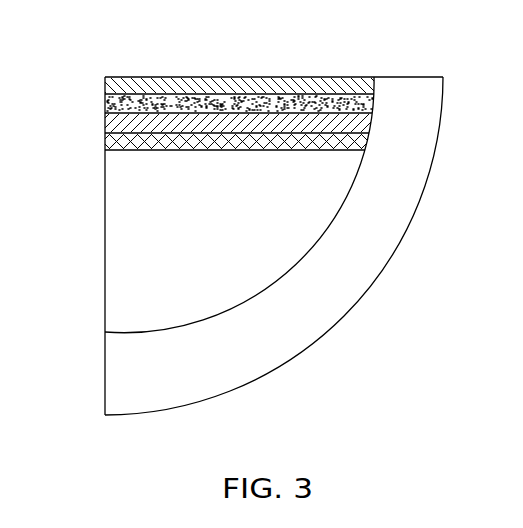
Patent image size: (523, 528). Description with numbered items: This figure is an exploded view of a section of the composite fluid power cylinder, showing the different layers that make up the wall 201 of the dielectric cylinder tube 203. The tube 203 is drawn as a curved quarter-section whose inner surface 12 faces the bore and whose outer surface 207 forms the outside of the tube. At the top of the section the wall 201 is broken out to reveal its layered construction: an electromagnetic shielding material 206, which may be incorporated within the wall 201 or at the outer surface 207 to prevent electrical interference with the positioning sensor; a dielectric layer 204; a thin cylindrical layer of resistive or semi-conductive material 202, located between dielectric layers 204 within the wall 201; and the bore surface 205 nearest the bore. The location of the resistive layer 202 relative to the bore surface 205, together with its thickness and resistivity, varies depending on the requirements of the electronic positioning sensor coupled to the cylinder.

The inner surface 12 is at (352, 175).
The wall 201 is at (428, 115).
The resistive material layer 202 is at (107, 120).
The dielectric cylinder tube 203 is at (341, 351).
The dielectric layers 204 is at (107, 97).
The bore surface 205 is at (107, 138).
The electromagnetic shielding material 206 is at (275, 83).
The outer surface 207 is at (245, 390).